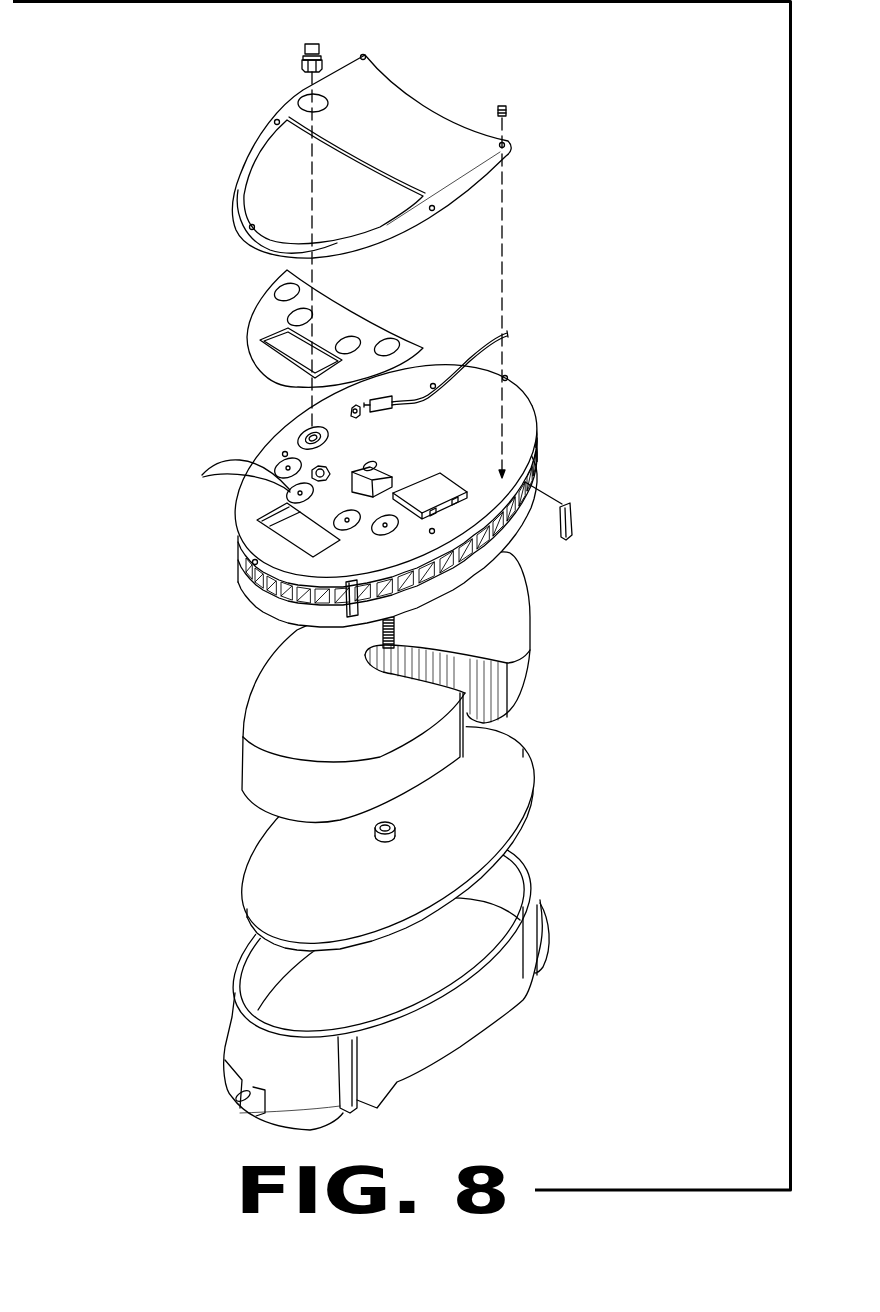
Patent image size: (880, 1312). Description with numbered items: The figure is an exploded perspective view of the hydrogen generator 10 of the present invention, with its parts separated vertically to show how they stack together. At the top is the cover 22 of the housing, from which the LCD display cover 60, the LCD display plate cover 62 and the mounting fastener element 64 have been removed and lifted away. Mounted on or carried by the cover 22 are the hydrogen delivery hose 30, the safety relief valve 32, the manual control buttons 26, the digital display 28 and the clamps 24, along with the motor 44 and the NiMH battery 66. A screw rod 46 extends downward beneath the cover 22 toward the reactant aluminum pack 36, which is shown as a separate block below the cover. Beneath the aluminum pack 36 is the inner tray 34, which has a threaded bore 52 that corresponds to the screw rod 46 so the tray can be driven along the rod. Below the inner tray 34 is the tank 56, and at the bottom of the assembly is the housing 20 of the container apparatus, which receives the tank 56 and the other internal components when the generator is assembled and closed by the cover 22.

The hydrogen generator 10 is at (620, 125).
The housing 20 is at (460, 1040).
The cover 22 is at (525, 378).
The clamp member 24 is at (572, 517).
The control button 26 is at (222, 482).
The digital display 28 is at (283, 537).
The hydrogen delivery hose 30 is at (479, 340).
The safety release valve 32 is at (303, 62).
The inner tray 34 is at (518, 788).
The aluminum pack 36 is at (517, 680).
The motor 44 is at (381, 467).
The screw rod 46 is at (498, 623).
The threaded bore 52 is at (397, 836).
The tank 56 is at (450, 947).
The LCD display cover 60 is at (238, 187).
The LCD display plate cover 62 is at (255, 322).
The fastener element 64 is at (502, 108).
The NiMH battery 66 is at (433, 475).